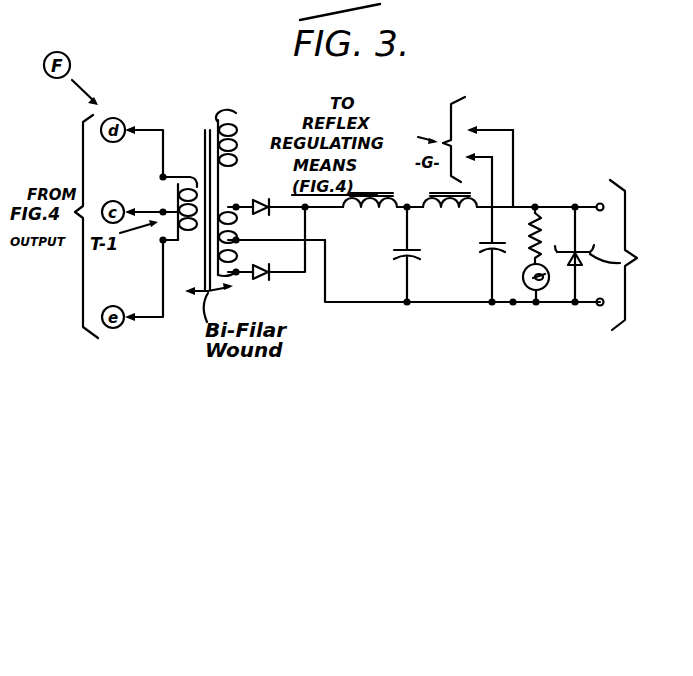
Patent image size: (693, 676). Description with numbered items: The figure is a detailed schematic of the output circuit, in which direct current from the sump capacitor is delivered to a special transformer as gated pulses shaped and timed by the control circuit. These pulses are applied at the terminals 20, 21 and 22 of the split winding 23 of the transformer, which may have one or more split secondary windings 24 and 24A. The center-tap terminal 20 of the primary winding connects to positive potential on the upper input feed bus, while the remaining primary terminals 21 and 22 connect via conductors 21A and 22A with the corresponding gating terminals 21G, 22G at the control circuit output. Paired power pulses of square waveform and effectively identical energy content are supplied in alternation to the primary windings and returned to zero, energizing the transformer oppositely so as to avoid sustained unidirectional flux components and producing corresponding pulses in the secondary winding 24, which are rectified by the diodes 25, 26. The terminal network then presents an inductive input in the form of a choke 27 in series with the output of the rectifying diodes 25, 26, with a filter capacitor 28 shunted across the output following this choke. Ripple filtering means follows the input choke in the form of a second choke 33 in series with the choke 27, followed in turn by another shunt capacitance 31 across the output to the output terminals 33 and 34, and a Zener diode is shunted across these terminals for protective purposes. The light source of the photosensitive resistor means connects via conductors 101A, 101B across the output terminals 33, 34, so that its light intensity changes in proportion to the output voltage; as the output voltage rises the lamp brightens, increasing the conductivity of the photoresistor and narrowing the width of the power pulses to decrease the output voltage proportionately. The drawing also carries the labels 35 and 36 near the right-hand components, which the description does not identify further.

The center-tap terminal 20 is at (162, 207).
The primary terminal 21 is at (162, 176).
The conductor 21A is at (163, 125).
The gating terminal 21G is at (118, 119).
The primary terminal 22 is at (162, 241).
The conductor 22A is at (145, 317).
The gating terminal 22G is at (116, 329).
The split winding 23 is at (185, 177).
The split secondary winding 24 is at (232, 193).
The split secondary winding 24A is at (233, 130).
The diode 25 is at (269, 199).
The diode 26 is at (262, 280).
The choke 27 is at (384, 210).
The filter capacitor 28 is at (396, 259).
The shunt capacitance 31 is at (480, 250).
The second choke 33 is at (467, 210).
The output terminal 34 is at (598, 310).
The voltage regulating diode and load 35 is at (613, 255).
The indicator lamp 36 is at (527, 288).
The conductor 101A is at (495, 122).
The conductor 101B is at (483, 172).